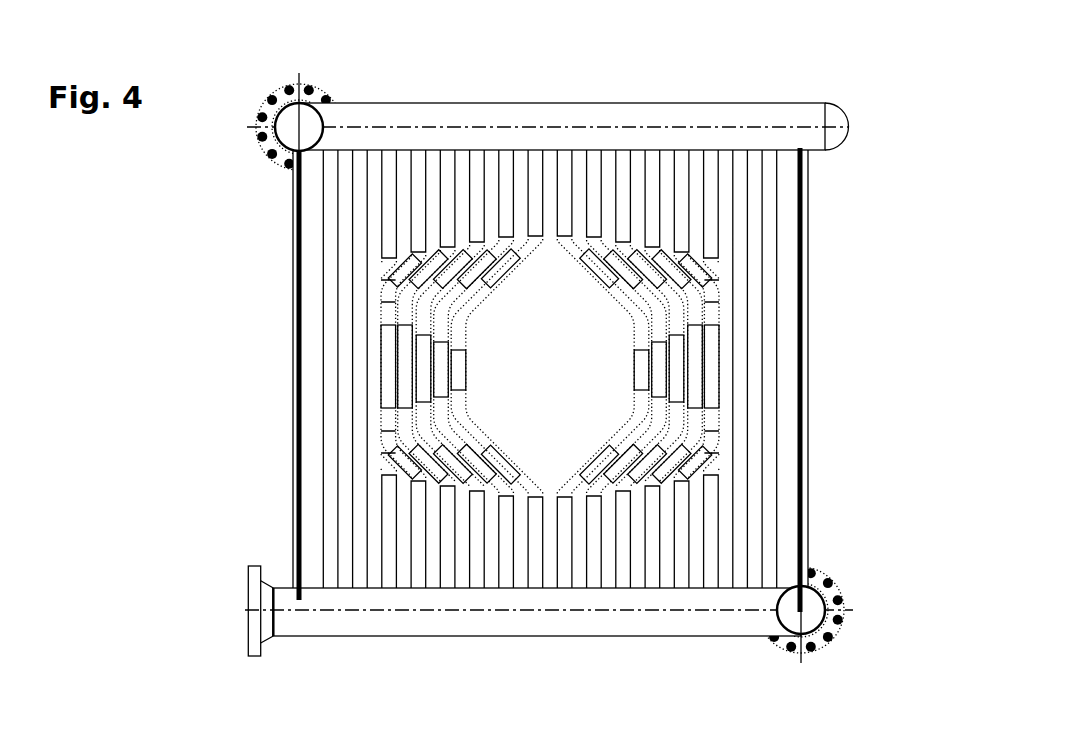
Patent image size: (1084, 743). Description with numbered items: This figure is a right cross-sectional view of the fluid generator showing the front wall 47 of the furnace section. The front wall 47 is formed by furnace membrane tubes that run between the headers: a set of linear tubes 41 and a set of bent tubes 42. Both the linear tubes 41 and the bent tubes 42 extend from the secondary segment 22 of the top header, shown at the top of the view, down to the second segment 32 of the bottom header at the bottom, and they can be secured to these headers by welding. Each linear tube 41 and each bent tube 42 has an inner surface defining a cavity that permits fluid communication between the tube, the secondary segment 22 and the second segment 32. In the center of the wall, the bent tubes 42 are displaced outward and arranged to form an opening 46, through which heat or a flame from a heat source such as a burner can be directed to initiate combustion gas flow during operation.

The secondary segment 22 is at (447, 115).
The second segment 32 is at (420, 625).
The linear tubes 41 is at (313, 378).
The bent tubes 42 is at (658, 410).
The opening 46 is at (528, 405).
The front wall 47 is at (706, 553).